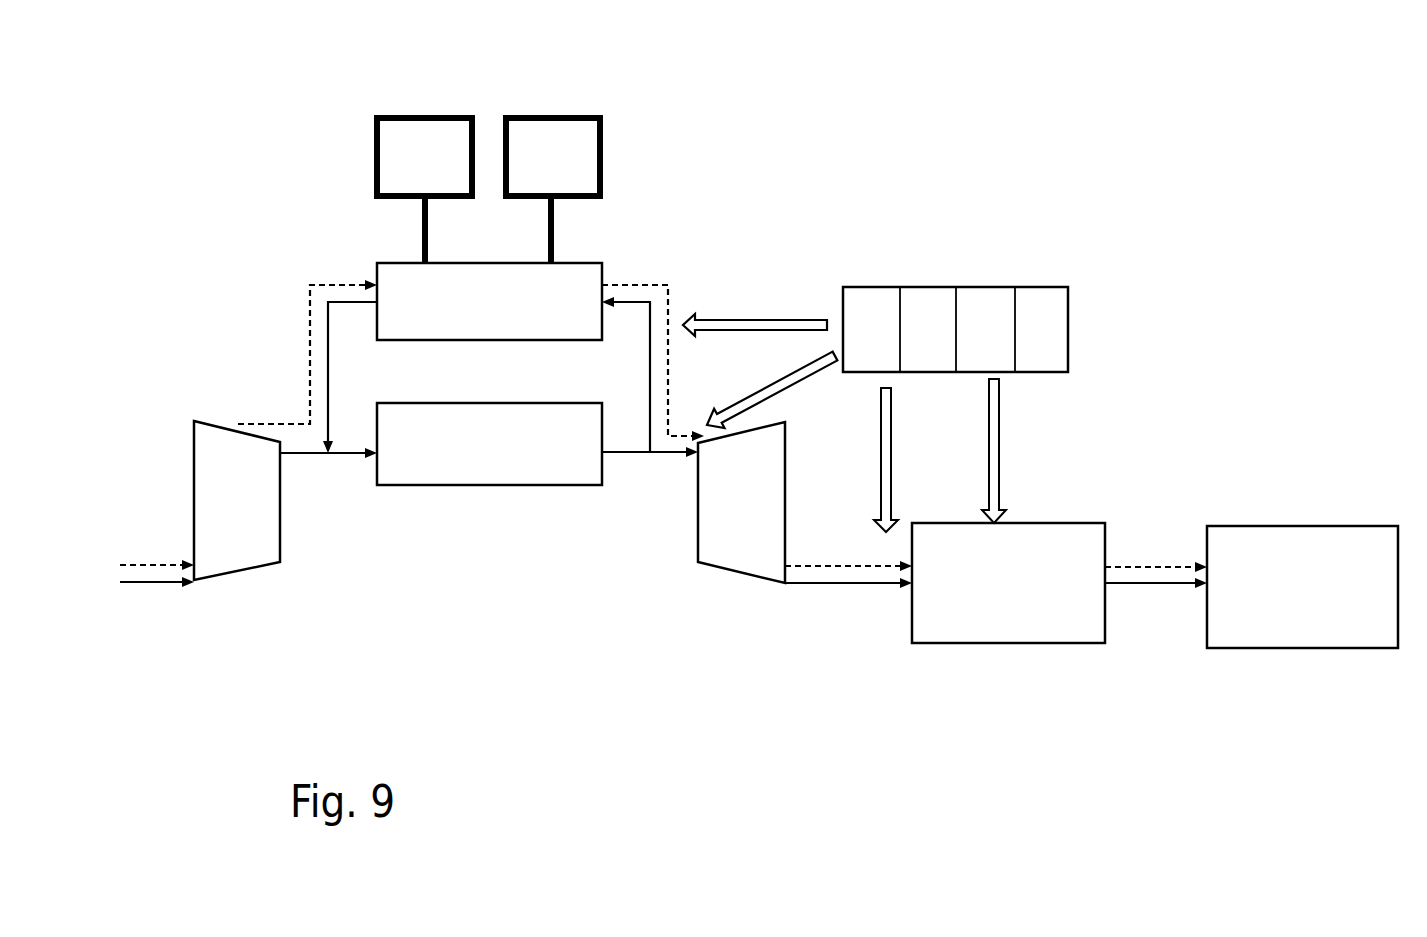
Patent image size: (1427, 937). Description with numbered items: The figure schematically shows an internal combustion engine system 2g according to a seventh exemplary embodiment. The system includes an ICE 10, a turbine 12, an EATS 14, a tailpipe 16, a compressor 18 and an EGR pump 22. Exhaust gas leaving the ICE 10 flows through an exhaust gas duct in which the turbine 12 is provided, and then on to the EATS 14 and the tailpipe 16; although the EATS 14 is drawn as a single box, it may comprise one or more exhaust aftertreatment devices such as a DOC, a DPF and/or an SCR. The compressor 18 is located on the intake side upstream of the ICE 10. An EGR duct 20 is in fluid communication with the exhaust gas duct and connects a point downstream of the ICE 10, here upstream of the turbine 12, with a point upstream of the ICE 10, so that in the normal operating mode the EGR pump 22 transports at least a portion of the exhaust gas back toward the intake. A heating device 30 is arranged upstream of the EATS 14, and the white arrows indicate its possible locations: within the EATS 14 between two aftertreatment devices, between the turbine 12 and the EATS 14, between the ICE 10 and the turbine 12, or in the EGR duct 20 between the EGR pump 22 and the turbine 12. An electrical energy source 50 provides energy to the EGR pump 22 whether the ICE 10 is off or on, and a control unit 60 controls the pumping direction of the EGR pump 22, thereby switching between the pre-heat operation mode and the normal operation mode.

The internal combustion engine system 2g is at (262, 170).
The ICE 10 is at (430, 448).
The turbine 12 is at (730, 543).
The EATS 14 is at (1025, 585).
The tailpipe 16 is at (1262, 594).
The compressor 18 is at (222, 537).
The EGR duct 20 is at (648, 428).
The EGR pump 22 is at (557, 282).
The heating device 30 is at (987, 287).
The electrical energy source 50 is at (412, 138).
The control unit 60 is at (580, 130).